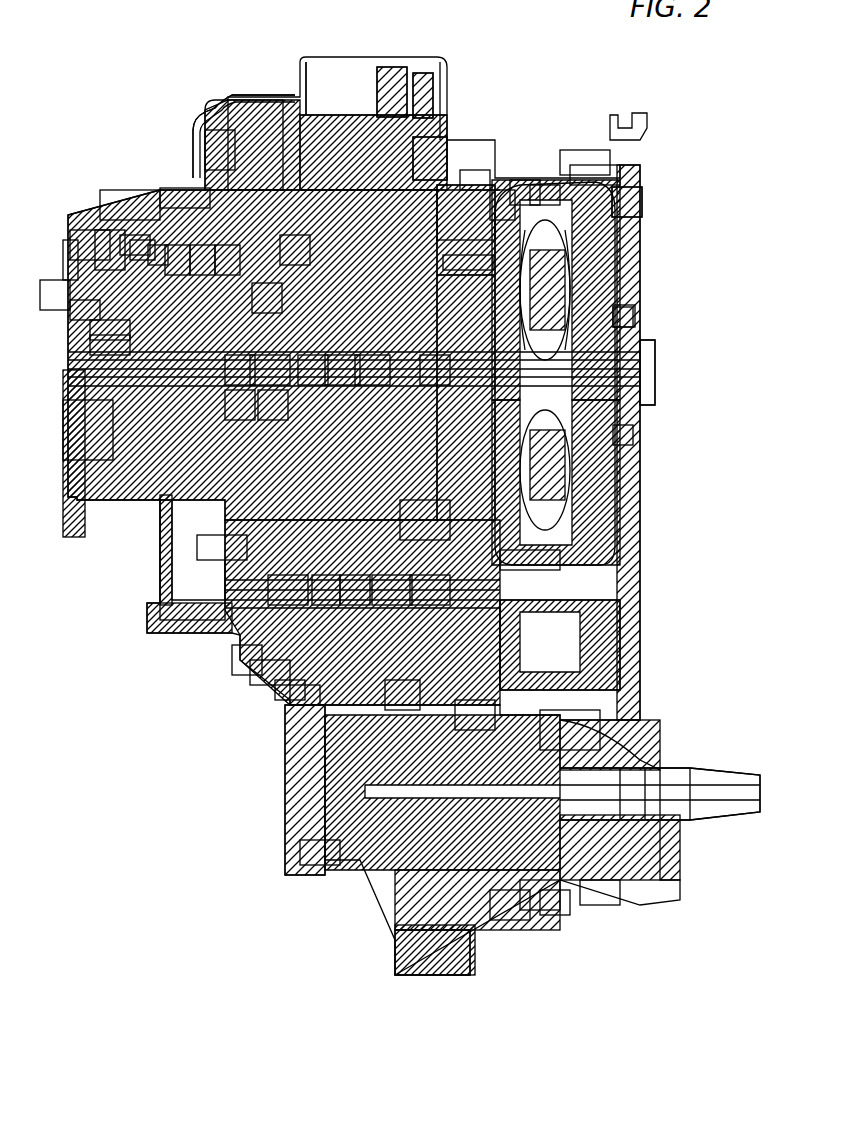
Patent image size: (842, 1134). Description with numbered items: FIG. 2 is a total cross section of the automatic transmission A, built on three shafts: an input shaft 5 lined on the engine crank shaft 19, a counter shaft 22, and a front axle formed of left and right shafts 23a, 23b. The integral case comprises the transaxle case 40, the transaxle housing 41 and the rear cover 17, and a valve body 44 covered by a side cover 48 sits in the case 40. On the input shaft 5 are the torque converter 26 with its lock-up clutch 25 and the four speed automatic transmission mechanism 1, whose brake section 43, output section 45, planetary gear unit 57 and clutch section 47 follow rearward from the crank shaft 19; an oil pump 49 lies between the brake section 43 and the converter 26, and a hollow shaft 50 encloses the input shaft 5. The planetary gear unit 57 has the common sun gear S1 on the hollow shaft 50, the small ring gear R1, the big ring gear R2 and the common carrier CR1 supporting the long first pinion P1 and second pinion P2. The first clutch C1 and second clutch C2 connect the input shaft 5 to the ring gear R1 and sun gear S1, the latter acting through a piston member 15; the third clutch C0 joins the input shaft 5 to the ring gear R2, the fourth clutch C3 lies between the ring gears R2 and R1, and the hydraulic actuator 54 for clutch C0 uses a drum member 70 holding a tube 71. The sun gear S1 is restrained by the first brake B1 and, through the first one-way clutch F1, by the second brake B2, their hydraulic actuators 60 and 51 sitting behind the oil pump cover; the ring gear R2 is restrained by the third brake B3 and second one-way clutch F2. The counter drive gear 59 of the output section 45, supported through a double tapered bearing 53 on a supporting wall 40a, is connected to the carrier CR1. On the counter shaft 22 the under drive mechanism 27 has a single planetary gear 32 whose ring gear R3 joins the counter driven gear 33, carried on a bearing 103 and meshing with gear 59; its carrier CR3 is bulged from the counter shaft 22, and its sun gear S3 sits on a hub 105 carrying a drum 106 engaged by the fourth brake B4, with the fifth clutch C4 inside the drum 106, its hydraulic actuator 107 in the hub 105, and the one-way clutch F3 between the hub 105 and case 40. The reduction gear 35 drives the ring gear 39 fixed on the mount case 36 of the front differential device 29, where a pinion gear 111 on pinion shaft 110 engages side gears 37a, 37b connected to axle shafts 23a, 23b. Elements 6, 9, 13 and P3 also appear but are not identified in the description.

The four speed automatic transmission mechanism 1 is at (40, 296).
The input shaft 5 is at (640, 360).
The transmission case 6 is at (75, 440).
The oil pump 9 is at (110, 345).
The stator shaft 13 is at (110, 335).
The piston member 15 is at (78, 312).
The rear cover 17 is at (68, 258).
The engine crank shaft 19 is at (650, 312).
The counter shaft 22 is at (525, 570).
The lock-up clutch 25 is at (638, 195).
The torque converter 26 is at (580, 175).
The under drive mechanism 27 is at (188, 581).
The front differential device 29 is at (555, 722).
The single planetary gear 32 is at (335, 695).
The counter driven gear 33 is at (425, 520).
The reduction gear 35 is at (565, 600).
The ring gear mount case 36 is at (468, 710).
The left side gear 37a is at (545, 905).
The right side gear 37b is at (600, 905).
The ring gear 39 is at (432, 965).
The transaxle case 40 is at (443, 165).
The supporting wall 40a is at (373, 370).
The transaxle housing 41 is at (585, 165).
The brake section 43 is at (478, 178).
The valve body 44 is at (282, 115).
The output section 45 is at (390, 260).
The clutch section 47 is at (171, 180).
The side cover 48 is at (250, 93).
The oil pump 49 is at (524, 180).
The hollow shaft 50 is at (270, 370).
The hydraulic actuator for the second brake 51 is at (462, 215).
The double tapered bearing 53 is at (130, 240).
The hydraulic actuator for the third clutch 54 is at (90, 252).
The planetary gear unit 57 is at (215, 150).
The counter drive gear 59 is at (375, 240).
The hydraulic actuator for the first brake 60 is at (547, 185).
The drum member 70 is at (140, 245).
The tube 71 is at (155, 255).
The bearing 103 is at (430, 590).
The hub 105 is at (288, 590).
The drum 106 is at (290, 690).
The hydraulic actuator 107 is at (240, 540).
The pinion shaft 110 is at (510, 910).
The pinion gear 111 is at (560, 915).
The left front axle shaft 23a is at (325, 860).
The right front axle shaft 23b is at (710, 820).
The automatic transmission A is at (112, 140).
The first brake B1 is at (503, 195).
The second brake B2 is at (458, 185).
The third brake B3 is at (295, 245).
The fourth brake B4 is at (300, 695).
The third clutch C0 is at (110, 235).
The first clutch C1 is at (205, 262).
The second clutch C2 is at (175, 250).
The fourth clutch C3 is at (224, 275).
The fifth clutch C4 is at (255, 672).
The first one-way clutch F1 is at (435, 370).
The second one-way clutch F2 is at (302, 70).
The one-way clutch F3 is at (235, 660).
The first pinion P1 is at (313, 370).
The second pinion P2 is at (273, 405).
The third pinion P3 is at (355, 590).
The ring gear R1 is at (240, 405).
The ring gear R2 is at (267, 298).
The ring gear R3 is at (402, 695).
The sun gear S1 is at (240, 370).
The sun gear S3 is at (326, 590).
The carrier CR1 is at (343, 370).
The carrier CR3 is at (392, 590).